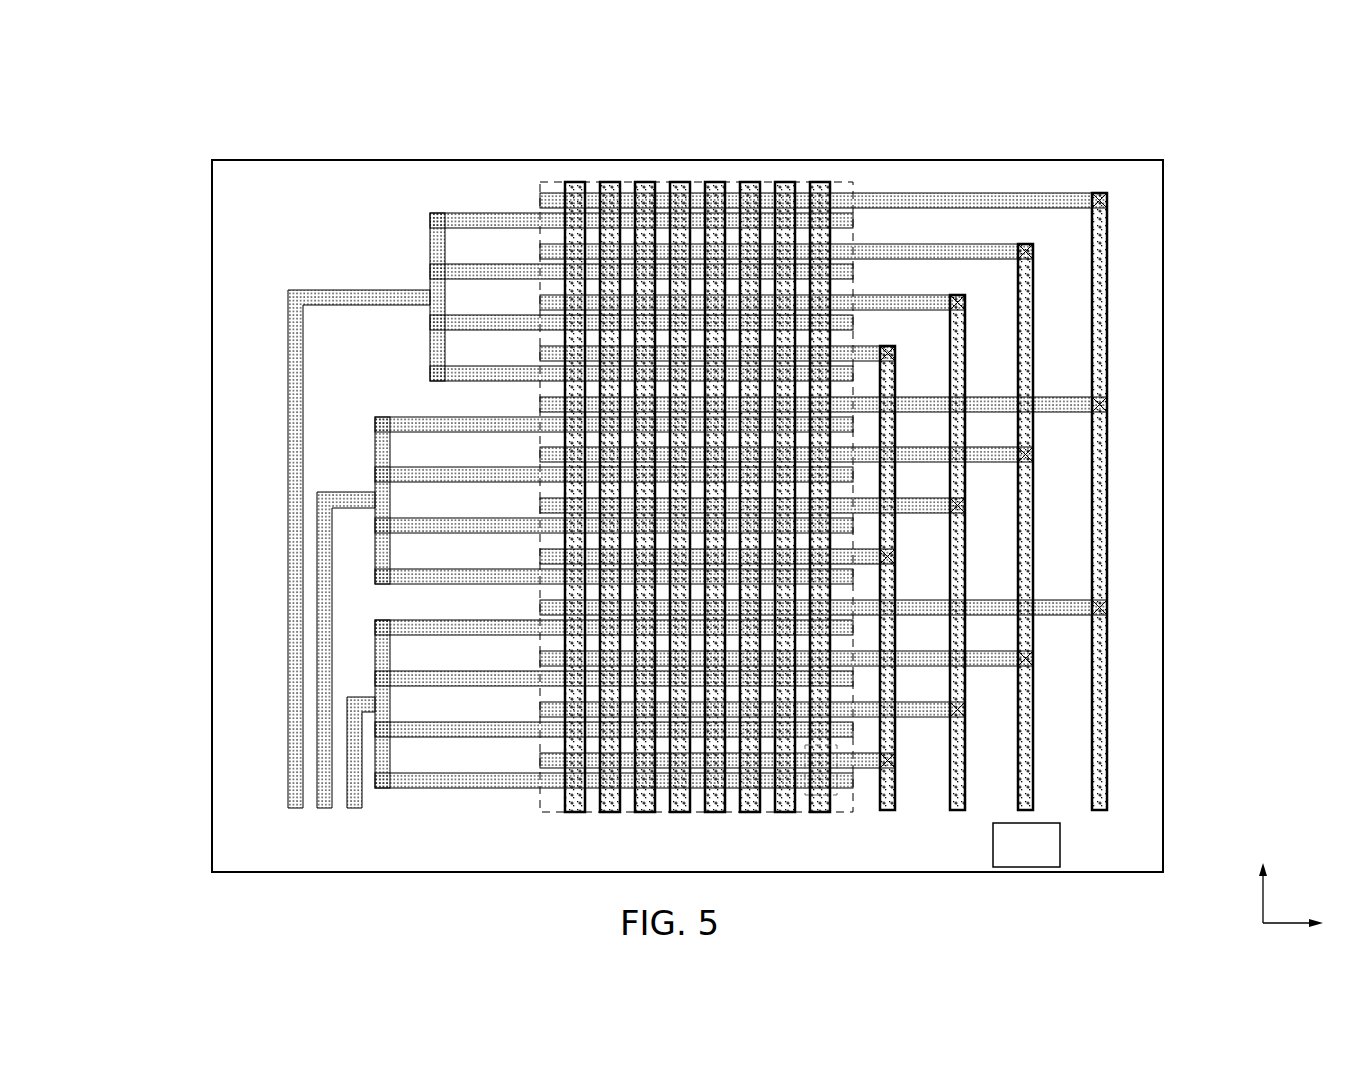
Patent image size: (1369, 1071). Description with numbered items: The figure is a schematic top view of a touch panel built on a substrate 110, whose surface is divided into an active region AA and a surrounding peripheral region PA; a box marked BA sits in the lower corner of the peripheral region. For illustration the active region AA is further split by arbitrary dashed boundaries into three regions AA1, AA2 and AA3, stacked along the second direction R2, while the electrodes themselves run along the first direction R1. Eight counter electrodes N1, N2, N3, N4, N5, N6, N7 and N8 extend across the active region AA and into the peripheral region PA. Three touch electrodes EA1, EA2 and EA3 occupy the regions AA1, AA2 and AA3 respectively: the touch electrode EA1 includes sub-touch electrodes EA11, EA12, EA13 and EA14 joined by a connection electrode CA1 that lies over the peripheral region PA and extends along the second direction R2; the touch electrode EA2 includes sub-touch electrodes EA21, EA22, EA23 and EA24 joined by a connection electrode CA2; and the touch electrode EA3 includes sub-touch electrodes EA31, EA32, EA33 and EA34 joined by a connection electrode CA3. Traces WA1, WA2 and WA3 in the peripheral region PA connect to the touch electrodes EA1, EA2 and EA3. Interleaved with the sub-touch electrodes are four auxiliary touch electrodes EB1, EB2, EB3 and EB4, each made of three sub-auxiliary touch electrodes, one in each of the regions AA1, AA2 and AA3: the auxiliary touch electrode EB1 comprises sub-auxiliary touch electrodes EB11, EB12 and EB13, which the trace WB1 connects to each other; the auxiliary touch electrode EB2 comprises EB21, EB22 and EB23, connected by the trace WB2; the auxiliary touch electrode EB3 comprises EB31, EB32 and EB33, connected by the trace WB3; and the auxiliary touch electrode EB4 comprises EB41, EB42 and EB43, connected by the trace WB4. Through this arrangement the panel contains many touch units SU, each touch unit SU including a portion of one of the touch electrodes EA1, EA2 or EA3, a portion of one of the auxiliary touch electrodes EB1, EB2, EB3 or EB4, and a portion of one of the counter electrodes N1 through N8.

The substrate 110 is at (231, 190).
The peripheral region PA is at (432, 160).
The active region AA is at (538, 168).
The first region of the active region AA1 is at (555, 165).
The second region of the active region AA2 is at (530, 605).
The third region of the active region AA3 is at (557, 828).
The counter electrode N1 is at (818, 190).
The counter electrode N2 is at (783, 190).
The counter electrode N3 is at (748, 190).
The counter electrode N4 is at (713, 190).
The counter electrode N5 is at (678, 190).
The counter electrode N6 is at (643, 190).
The counter electrode N7 is at (607, 190).
The counter electrode N8 is at (572, 190).
The touch electrode EA1 is at (110, 232).
The sub-touch electrode EA11 is at (550, 220).
The sub-touch electrode EA12 is at (550, 270).
The sub-touch electrode EA13 is at (552, 322).
The sub-touch electrode EA14 is at (550, 372).
The connection electrode CA1 is at (432, 365).
The touch electrode EA2 is at (110, 478).
The sub-touch electrode EA21 is at (553, 425).
The sub-touch electrode EA22 is at (553, 475).
The sub-touch electrode EA23 is at (553, 525).
The sub-touch electrode EA24 is at (553, 578).
The connection electrode CA2 is at (388, 578).
The touch electrode EA3 is at (110, 688).
The sub-touch electrode EA31 is at (486, 670).
The sub-touch electrode EA32 is at (486, 714).
The sub-touch electrode EA33 is at (486, 759).
The sub-touch electrode EA34 is at (486, 802).
The connection electrode CA3 is at (257, 745).
The trace WA1 is at (295, 808).
The trace WA2 is at (323, 808).
The trace WA3 is at (352, 808).
The auxiliary touch electrode EB1 is at (1262, 478).
The sub-auxiliary touch electrode EB11 is at (1007, 205).
The sub-auxiliary touch electrode EB12 is at (1062, 405).
The sub-auxiliary touch electrode EB13 is at (1062, 613).
The auxiliary touch electrode EB2 is at (1262, 607).
The sub-auxiliary touch electrode EB21 is at (1007, 257).
The sub-auxiliary touch electrode EB22 is at (1010, 457).
The sub-auxiliary touch electrode EB23 is at (1003, 660).
The auxiliary touch electrode EB3 is at (1318, 72).
The sub-auxiliary touch electrode EB31 is at (937, 303).
The sub-auxiliary touch electrode EB32 is at (933, 503).
The sub-auxiliary touch electrode EB33 is at (928, 710).
The auxiliary touch electrode EB4 is at (1002, 67).
The sub-auxiliary touch electrode EB41 is at (865, 353).
The sub-auxiliary touch electrode EB42 is at (867, 760).
The sub-auxiliary touch electrode EB43 is at (862, 557).
The trace WB1 is at (1100, 750).
The trace WB2 is at (1030, 798).
The trace WB3 is at (955, 812).
The trace WB4 is at (888, 812).
The touch unit SU is at (803, 815).
The bonding area BA is at (1045, 860).
The first direction R1 is at (1314, 924).
The second direction R2 is at (1264, 877).